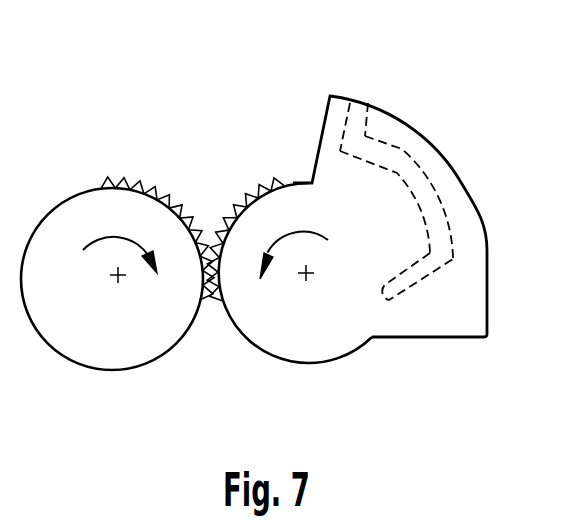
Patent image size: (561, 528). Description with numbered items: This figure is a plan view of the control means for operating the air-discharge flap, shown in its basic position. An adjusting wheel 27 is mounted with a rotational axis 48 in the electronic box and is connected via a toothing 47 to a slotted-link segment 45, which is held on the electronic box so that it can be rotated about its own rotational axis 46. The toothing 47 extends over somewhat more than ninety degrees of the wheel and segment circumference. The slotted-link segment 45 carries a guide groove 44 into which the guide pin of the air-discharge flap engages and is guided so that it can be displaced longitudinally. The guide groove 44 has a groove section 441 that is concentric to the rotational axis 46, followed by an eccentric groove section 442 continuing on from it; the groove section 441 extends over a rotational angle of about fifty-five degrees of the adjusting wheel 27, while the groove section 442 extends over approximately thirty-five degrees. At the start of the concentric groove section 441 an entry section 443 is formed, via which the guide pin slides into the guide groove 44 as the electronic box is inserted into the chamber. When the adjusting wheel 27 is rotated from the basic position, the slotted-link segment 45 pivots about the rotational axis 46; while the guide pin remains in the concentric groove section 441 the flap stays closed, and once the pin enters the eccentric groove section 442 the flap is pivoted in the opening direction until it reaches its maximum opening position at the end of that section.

The adjusting wheel 27 is at (110, 348).
The rotational axis 48 is at (119, 275).
The slotted-link segment 45 is at (277, 228).
The rotational axis 46 is at (306, 275).
The toothing 47 is at (207, 293).
The guide groove 44 is at (435, 196).
The groove section 441 is at (402, 167).
The eccentric groove section 442 is at (417, 280).
The entry section 443 is at (362, 107).